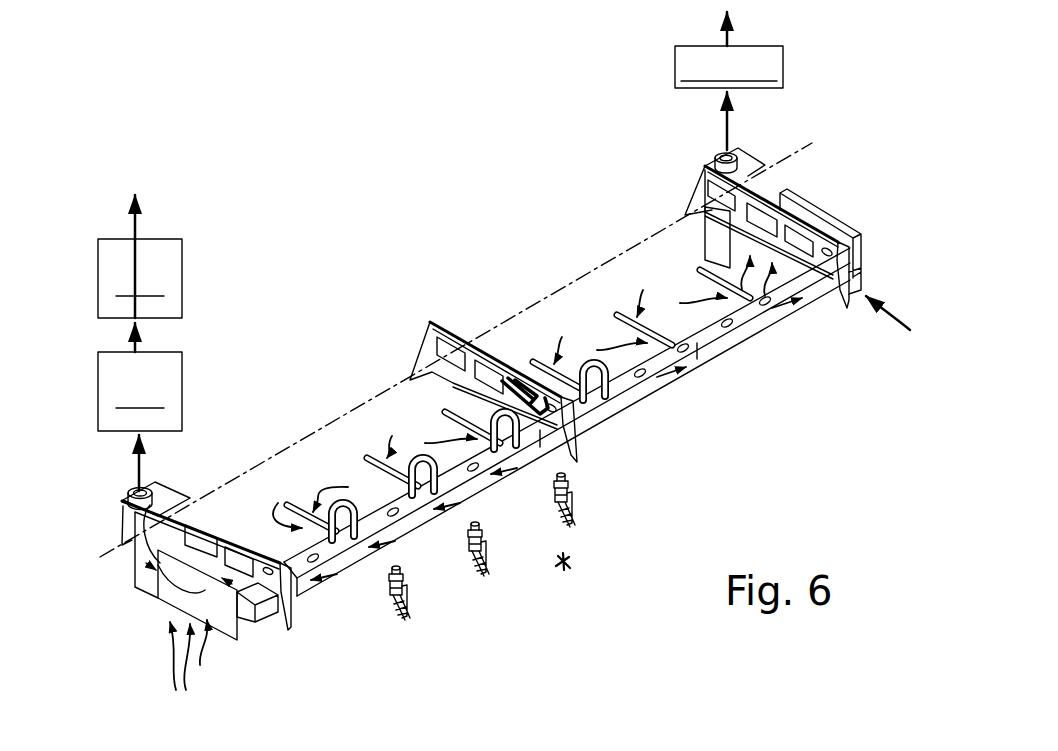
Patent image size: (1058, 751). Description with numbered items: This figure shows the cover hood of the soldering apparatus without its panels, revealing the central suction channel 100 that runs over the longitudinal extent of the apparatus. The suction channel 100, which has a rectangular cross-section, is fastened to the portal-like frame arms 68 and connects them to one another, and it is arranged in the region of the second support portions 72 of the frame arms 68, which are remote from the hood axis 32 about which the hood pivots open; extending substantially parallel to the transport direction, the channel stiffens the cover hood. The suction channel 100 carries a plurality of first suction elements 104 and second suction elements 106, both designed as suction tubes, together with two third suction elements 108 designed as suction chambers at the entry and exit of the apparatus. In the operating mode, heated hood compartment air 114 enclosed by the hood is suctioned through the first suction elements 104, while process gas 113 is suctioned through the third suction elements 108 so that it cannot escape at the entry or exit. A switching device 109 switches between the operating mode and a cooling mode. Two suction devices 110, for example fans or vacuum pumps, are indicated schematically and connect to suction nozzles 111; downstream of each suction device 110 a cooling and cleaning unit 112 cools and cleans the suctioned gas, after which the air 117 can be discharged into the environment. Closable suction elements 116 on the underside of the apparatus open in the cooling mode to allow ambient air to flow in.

The hood axis 32 is at (260, 448).
The frame arms 68 is at (193, 520).
The second support portion 72 is at (290, 622).
The central suction channel 100 is at (736, 335).
The first suction elements 104 is at (367, 457).
The second suction elements 106 is at (507, 450).
The third suction elements 108 is at (225, 607).
The switching device 109 is at (503, 380).
The suction devices 110 is at (440, 238).
The suction nozzles 111 is at (150, 509).
The cooling and cleaning unit 112 is at (140, 278).
The process gas 113 is at (192, 668).
The hood compartment air 114 is at (134, 462).
The closable suction elements 116 is at (560, 528).
The air 117 is at (137, 222).